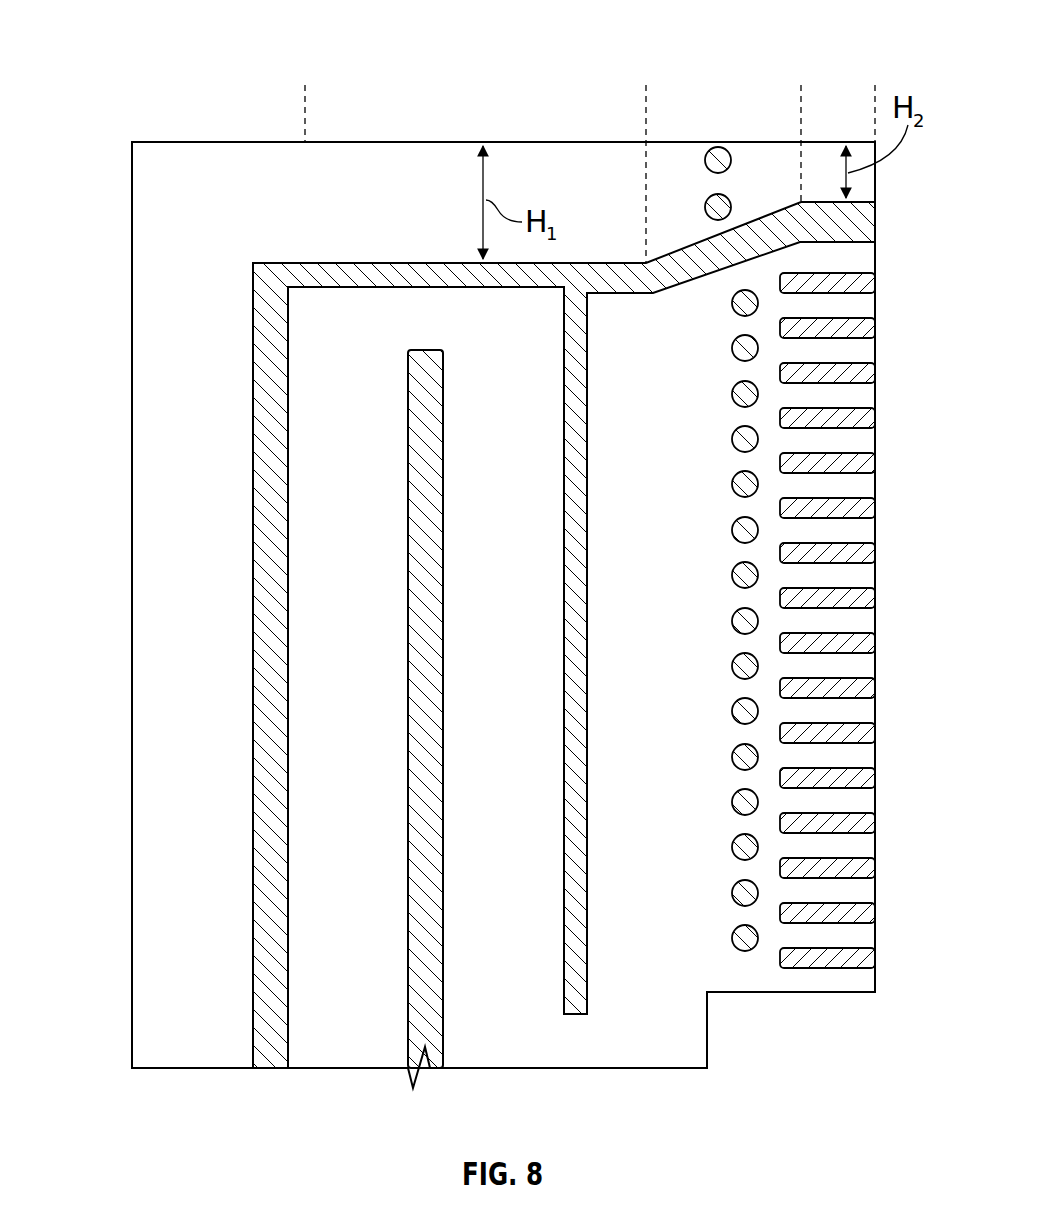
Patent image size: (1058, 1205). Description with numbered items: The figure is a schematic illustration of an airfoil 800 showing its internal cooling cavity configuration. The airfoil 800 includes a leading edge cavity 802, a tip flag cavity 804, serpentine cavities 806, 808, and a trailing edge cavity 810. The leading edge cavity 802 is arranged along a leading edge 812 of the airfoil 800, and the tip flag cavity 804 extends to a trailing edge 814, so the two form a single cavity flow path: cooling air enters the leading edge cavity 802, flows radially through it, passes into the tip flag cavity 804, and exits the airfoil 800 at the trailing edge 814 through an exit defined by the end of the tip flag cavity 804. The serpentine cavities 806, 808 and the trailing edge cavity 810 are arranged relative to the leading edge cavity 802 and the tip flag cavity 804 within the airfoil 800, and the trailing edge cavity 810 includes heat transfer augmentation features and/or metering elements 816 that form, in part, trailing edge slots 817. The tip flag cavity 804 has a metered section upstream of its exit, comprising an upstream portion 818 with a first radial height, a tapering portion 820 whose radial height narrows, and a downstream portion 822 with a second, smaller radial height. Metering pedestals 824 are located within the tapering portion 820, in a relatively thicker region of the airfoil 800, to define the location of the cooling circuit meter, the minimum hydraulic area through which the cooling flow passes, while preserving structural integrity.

The airfoil 800 is at (122, 86).
The leading edge cavity 802 is at (212, 598).
The tip flag cavity 804 is at (419, 221).
The serpentine cavity 806 is at (367, 749).
The serpentine cavity 808 is at (511, 745).
The trailing edge cavity 810 is at (674, 743).
The leading edge 812 is at (132, 390).
The trailing edge 814 is at (876, 305).
The heat transfer augmentation features and/or metering elements 816 is at (745, 950).
The trailing edge slots 817 is at (853, 889).
The upstream portion 818 is at (646, 88).
The tapering portion 820 is at (801, 88).
The downstream portion 822 is at (875, 88).
The metering pedestals 824 is at (699, 163).